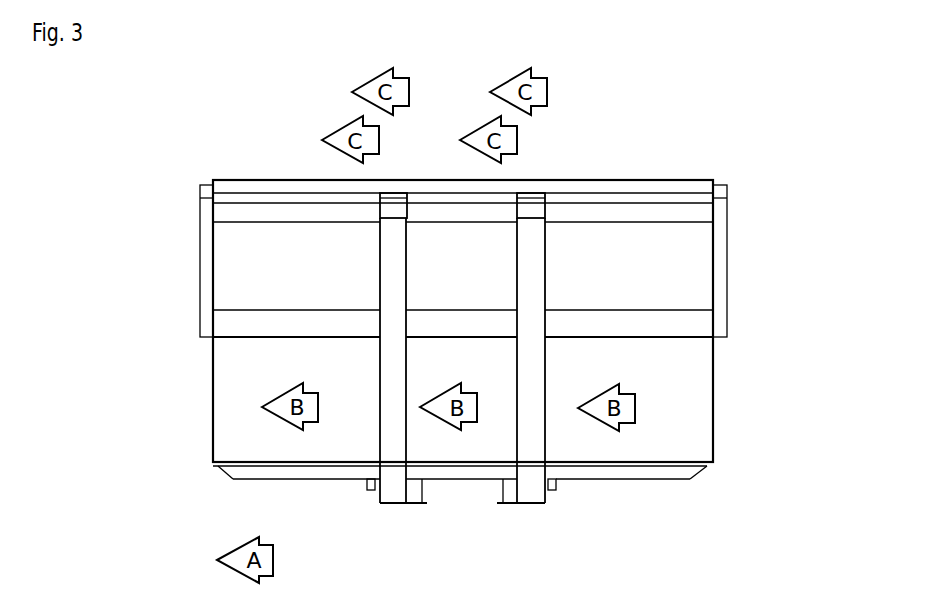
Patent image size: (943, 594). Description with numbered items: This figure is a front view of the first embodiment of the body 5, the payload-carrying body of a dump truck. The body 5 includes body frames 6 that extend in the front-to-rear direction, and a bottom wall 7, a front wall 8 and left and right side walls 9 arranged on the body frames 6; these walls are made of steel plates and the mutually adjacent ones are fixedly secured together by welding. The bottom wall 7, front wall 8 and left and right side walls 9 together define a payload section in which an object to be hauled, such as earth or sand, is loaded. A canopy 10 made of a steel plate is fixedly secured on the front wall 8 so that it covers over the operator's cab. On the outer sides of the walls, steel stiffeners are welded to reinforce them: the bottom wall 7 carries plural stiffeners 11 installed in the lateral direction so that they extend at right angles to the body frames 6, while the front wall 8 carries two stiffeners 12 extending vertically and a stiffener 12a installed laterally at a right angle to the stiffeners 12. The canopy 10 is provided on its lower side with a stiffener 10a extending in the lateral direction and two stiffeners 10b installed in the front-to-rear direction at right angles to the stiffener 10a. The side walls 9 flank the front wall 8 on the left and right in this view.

The body 5 is at (667, 180).
The body frames 6 is at (390, 503).
The bottom wall 7 is at (587, 463).
The front wall 8 is at (693, 405).
The left and right side walls 9 is at (215, 272).
The canopy 10 is at (587, 180).
The stiffener 10a is at (673, 215).
The stiffeners 10b is at (528, 198).
The stiffeners 11 is at (670, 480).
The stiffeners 12 is at (540, 272).
The stiffener 12a is at (672, 325).